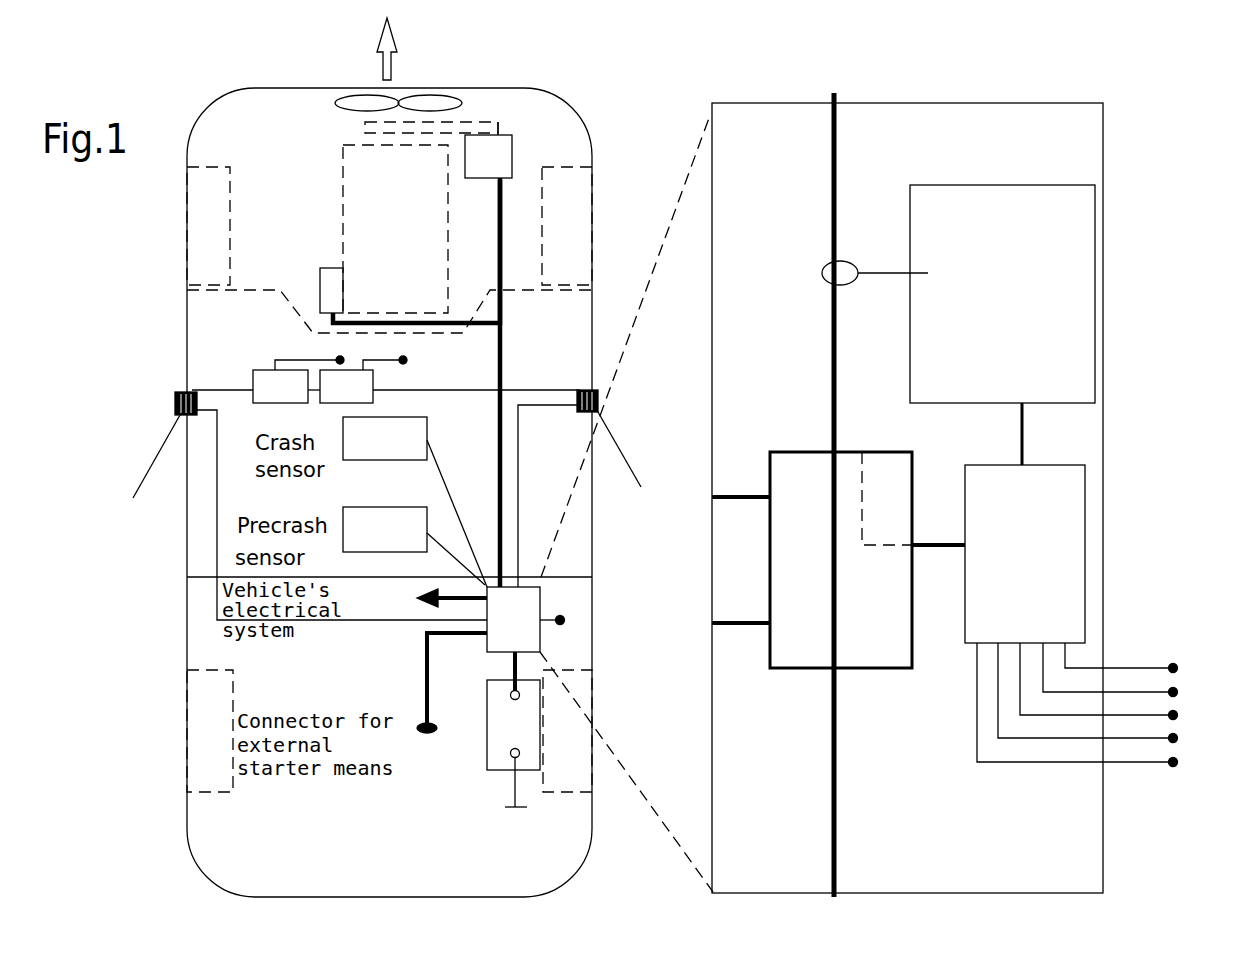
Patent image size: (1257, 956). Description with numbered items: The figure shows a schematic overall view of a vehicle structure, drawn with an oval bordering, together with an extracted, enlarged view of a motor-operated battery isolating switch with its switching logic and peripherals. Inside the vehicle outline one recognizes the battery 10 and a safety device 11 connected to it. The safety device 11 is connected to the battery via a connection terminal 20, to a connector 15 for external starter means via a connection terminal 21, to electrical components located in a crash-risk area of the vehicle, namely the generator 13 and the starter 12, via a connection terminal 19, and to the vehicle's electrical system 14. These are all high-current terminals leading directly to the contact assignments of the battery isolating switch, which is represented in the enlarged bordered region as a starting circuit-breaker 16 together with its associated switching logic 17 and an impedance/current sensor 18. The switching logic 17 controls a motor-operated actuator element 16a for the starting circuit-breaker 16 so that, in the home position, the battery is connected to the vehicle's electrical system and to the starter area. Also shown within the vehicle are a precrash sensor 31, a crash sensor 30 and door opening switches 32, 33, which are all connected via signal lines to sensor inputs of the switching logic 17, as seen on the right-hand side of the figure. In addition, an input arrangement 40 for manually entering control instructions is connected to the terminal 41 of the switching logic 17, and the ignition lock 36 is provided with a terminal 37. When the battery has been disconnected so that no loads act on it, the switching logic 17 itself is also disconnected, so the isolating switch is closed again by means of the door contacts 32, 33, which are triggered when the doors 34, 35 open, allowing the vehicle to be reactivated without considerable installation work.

The battery 10 is at (513, 729).
The safety device 11 is at (1172, 257).
The starter 12 is at (330, 277).
The generator 13 is at (488, 156).
The vehicle's electrical system 14 is at (429, 606).
The connector for external starter means 15 is at (426, 750).
The starting circuit-breaker 16 is at (838, 560).
The motor-operated actuator element 16a is at (887, 498).
The switching logic 17 is at (1105, 616).
The impedance/current sensor 18 is at (958, 325).
The connection terminal 19 is at (503, 380).
The connection terminal 20 is at (838, 785).
The connection terminal 21 is at (424, 700).
The crash sensor 30 is at (415, 502).
The precrash sensor 31 is at (414, 546).
The door opening switch 32 is at (175, 409).
The door opening switch 33 is at (600, 401).
The door 34 is at (149, 470).
The door 35 is at (630, 470).
The ignition lock 36 is at (253, 385).
The terminal 37 is at (309, 351).
The input arrangement 40 is at (346, 387).
The terminal 41 is at (401, 358).